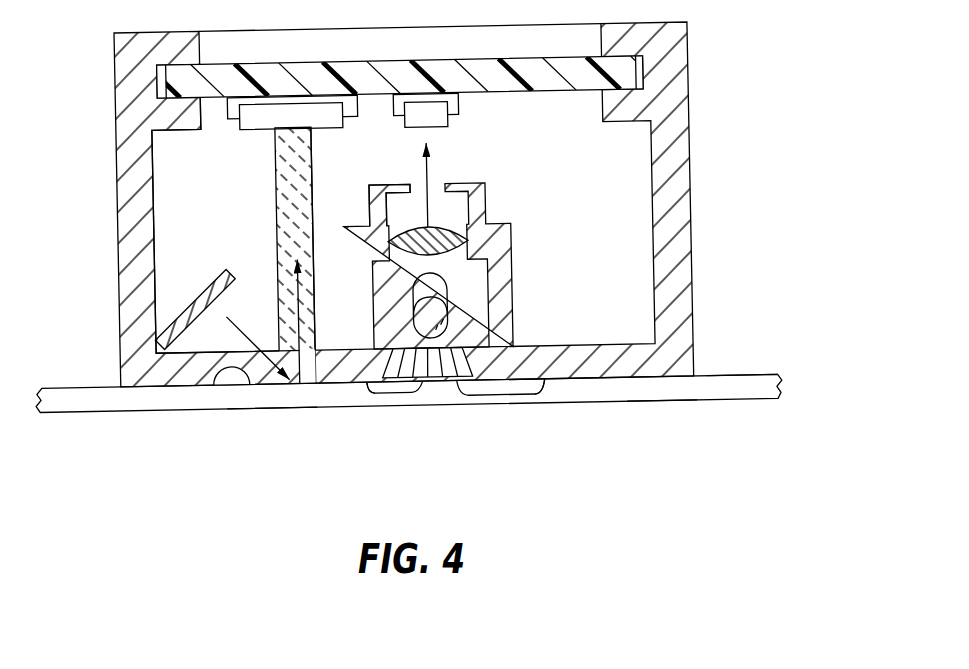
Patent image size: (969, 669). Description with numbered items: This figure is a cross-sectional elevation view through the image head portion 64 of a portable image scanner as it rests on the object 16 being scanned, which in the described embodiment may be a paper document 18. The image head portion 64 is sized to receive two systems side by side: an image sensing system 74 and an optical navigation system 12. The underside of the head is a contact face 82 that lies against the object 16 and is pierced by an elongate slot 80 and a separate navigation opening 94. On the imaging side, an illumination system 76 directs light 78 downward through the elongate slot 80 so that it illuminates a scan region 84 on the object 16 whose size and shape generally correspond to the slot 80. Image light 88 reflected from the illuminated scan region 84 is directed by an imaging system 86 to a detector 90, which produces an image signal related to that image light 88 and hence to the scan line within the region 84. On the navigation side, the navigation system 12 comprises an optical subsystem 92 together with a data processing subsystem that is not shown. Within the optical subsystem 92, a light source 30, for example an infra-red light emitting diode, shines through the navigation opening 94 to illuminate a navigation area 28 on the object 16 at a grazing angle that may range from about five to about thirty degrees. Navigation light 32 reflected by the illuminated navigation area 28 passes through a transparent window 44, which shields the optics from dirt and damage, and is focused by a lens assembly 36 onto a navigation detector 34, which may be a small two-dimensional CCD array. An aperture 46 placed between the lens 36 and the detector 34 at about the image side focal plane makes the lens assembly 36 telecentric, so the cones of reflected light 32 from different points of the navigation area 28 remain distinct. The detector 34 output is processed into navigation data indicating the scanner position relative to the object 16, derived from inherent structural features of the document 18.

The navigation system 12 is at (605, 202).
The object 16 is at (779, 392).
The paper document 18 is at (740, 387).
The navigation area 28 is at (480, 422).
The light source 30 is at (442, 318).
The navigation light 32 is at (427, 190).
The navigation detector 34 is at (445, 134).
The lens assembly 36 is at (458, 230).
The transparent window 44 is at (355, 411).
The aperture 46 is at (389, 187).
The image head portion 64 is at (687, 81).
The image sensing system 74 is at (185, 197).
The illumination system 76 is at (229, 272).
The light 78 is at (237, 330).
The elongate slot 80 is at (226, 390).
The contact face 82 is at (650, 388).
The scan region 84 is at (310, 423).
The imaging system 86 is at (311, 147).
The image light 88 is at (334, 412).
The detector 90 is at (251, 133).
The optical subsystem 92 is at (508, 283).
The navigation opening 94 is at (531, 410).